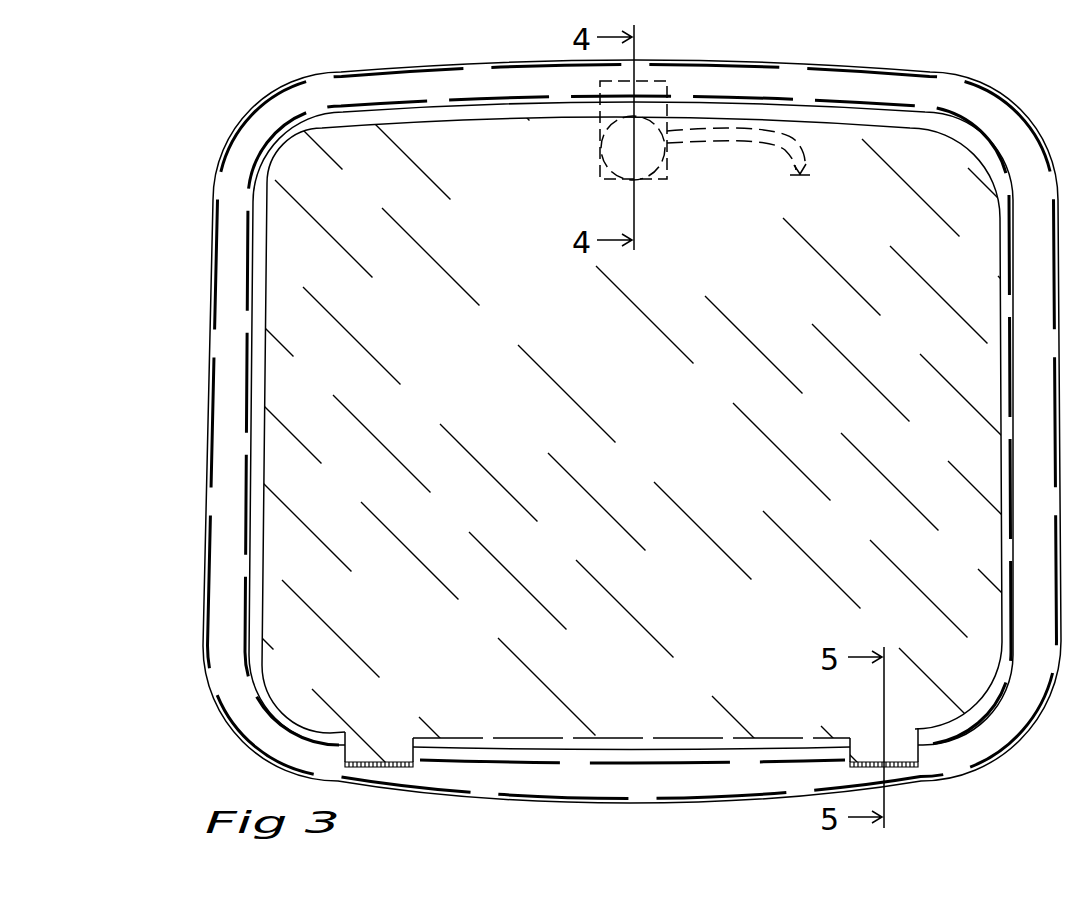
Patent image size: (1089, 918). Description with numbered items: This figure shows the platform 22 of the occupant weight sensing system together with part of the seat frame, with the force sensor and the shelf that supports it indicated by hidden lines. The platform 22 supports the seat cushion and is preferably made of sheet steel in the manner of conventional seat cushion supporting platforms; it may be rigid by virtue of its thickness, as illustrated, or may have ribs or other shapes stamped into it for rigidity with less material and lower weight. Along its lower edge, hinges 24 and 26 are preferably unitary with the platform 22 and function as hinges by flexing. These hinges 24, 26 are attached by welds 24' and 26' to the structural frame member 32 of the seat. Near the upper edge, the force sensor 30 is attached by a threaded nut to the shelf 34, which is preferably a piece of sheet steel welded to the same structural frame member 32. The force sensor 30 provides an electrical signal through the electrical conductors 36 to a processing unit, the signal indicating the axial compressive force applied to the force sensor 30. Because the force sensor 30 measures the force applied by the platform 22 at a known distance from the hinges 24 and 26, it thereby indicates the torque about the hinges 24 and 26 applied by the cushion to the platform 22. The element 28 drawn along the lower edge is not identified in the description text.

The platform 22 is at (628, 376).
The hinge 24 is at (418, 719).
The weld 24' is at (419, 802).
The hinge 26 is at (837, 719).
The weld 26' is at (932, 794).
The seal strip 28 is at (717, 737).
The force sensor 30 is at (623, 157).
The structural frame member 32 is at (432, 110).
The shelf 34 is at (658, 180).
The electrical conductors 36 is at (705, 140).